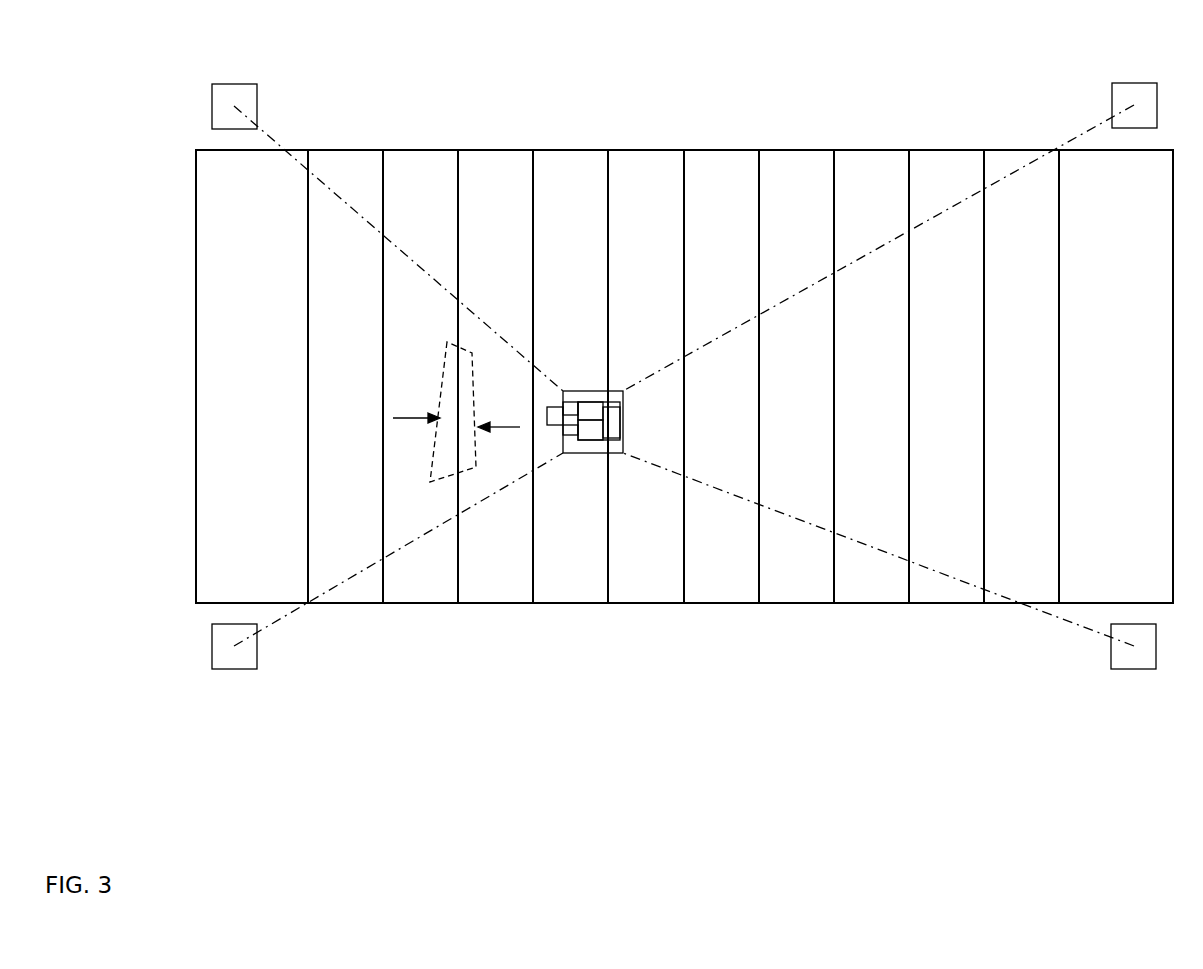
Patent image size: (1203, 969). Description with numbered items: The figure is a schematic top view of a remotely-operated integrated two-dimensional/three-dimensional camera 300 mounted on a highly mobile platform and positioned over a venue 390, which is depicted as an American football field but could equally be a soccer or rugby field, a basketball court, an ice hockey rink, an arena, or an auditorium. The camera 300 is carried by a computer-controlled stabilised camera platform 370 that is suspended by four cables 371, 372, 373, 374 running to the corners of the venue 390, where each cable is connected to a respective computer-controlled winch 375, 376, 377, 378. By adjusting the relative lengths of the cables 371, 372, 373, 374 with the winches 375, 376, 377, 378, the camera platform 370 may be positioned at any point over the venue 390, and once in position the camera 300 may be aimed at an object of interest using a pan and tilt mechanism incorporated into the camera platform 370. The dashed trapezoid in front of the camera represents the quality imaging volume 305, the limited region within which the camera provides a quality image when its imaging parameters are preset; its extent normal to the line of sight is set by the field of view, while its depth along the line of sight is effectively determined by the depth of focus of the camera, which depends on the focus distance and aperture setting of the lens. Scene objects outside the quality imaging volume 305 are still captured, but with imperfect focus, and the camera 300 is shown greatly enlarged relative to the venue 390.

The integrated 2D/3D camera 300 is at (588, 453).
The quality imaging volume 305 is at (442, 380).
The camera platform 370 is at (595, 392).
The cable 371 is at (420, 536).
The cable 372 is at (957, 578).
The cable 373 is at (1003, 183).
The cable 374 is at (323, 187).
The winch 375 is at (233, 670).
The winch 376 is at (1133, 670).
The winch 377 is at (1140, 83).
The winch 378 is at (212, 107).
The venue 390 is at (165, 455).